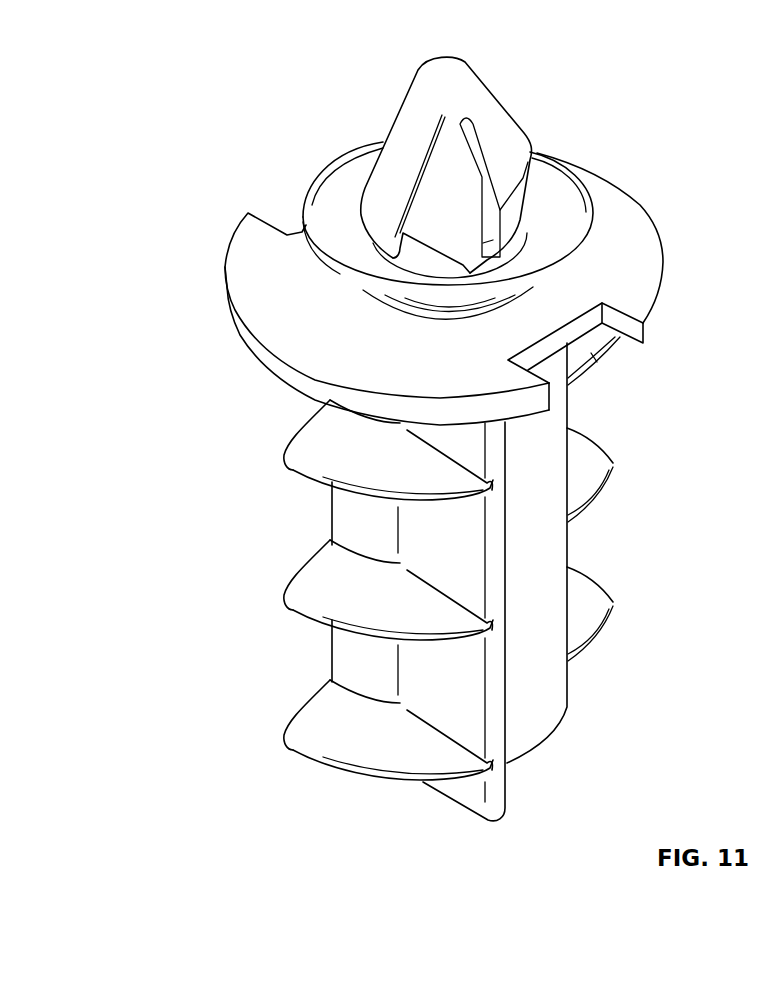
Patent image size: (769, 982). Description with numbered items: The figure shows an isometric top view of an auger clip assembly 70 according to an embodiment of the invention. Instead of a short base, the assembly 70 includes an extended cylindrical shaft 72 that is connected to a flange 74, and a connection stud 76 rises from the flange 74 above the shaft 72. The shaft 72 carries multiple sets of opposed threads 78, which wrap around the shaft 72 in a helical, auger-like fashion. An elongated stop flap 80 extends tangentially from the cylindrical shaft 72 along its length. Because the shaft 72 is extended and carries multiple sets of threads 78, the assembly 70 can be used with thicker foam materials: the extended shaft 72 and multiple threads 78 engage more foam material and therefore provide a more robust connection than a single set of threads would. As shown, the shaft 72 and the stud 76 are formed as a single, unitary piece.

The auger clip assembly 70 is at (265, 88).
The extended cylindrical shaft 72 is at (553, 560).
The flange 74 is at (633, 232).
The connection stud 76 is at (497, 104).
The opposed threads 78 is at (594, 358).
The elongated stop flap 80 is at (503, 805).